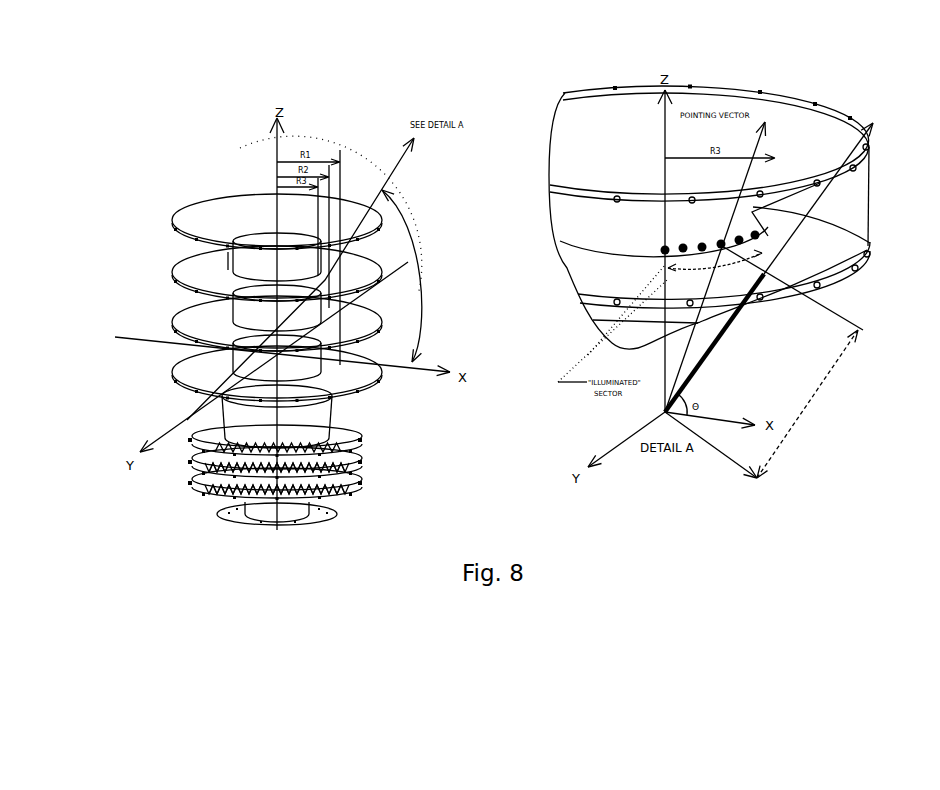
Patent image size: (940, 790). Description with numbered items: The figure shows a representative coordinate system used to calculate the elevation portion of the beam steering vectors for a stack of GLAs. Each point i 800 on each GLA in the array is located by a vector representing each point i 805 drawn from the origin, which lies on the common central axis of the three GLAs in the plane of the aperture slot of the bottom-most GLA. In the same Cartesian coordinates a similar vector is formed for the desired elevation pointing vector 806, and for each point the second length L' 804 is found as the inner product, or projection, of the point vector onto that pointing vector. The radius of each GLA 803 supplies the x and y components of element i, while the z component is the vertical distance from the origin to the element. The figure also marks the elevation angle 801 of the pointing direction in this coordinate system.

The point i 800 is at (718, 244).
The elevation angle 801 is at (421, 297).
The radius of each GLA 803 is at (277, 237).
The second length L' 804 is at (820, 410).
The vector representing each point i 805 is at (738, 174).
The desired elevation pointing vector 806 is at (820, 196).